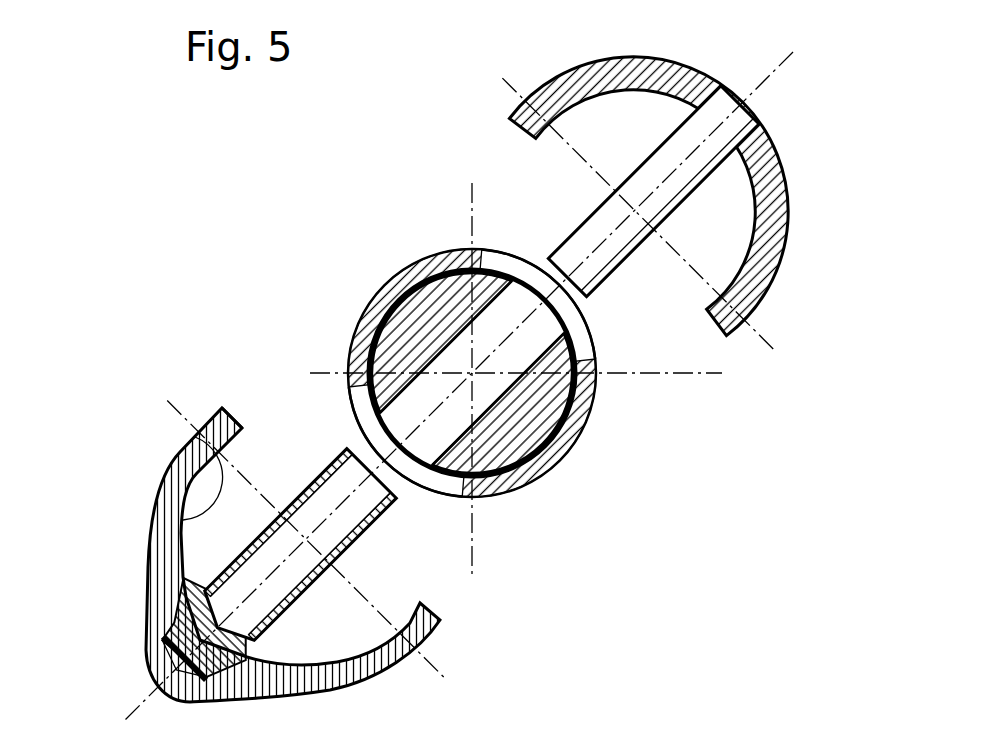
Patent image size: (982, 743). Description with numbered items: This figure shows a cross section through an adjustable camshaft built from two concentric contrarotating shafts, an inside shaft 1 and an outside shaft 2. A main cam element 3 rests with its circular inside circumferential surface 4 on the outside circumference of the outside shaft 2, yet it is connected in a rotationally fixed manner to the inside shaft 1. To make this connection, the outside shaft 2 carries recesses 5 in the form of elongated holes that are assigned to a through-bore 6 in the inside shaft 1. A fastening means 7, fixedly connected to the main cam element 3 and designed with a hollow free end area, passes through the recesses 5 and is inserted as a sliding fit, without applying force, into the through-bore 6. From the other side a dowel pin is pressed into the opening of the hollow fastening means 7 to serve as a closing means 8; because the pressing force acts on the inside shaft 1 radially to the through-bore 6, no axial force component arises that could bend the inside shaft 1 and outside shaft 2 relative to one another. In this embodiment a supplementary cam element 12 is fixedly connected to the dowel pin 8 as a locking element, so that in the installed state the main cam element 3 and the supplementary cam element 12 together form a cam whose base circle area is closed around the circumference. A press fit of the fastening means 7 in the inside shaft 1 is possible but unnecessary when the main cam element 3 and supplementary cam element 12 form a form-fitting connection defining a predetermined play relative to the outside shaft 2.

The inside shaft 1 is at (422, 303).
The outside shaft 2 is at (363, 300).
The main cam element 3 is at (167, 562).
The circular inside circumferential surface 4 is at (210, 445).
The recesses 5 is at (584, 327).
The through-bore 6 is at (503, 310).
The fastening means 7 is at (312, 473).
The closing means 8 is at (610, 272).
The supplementary cam element 12 is at (695, 64).